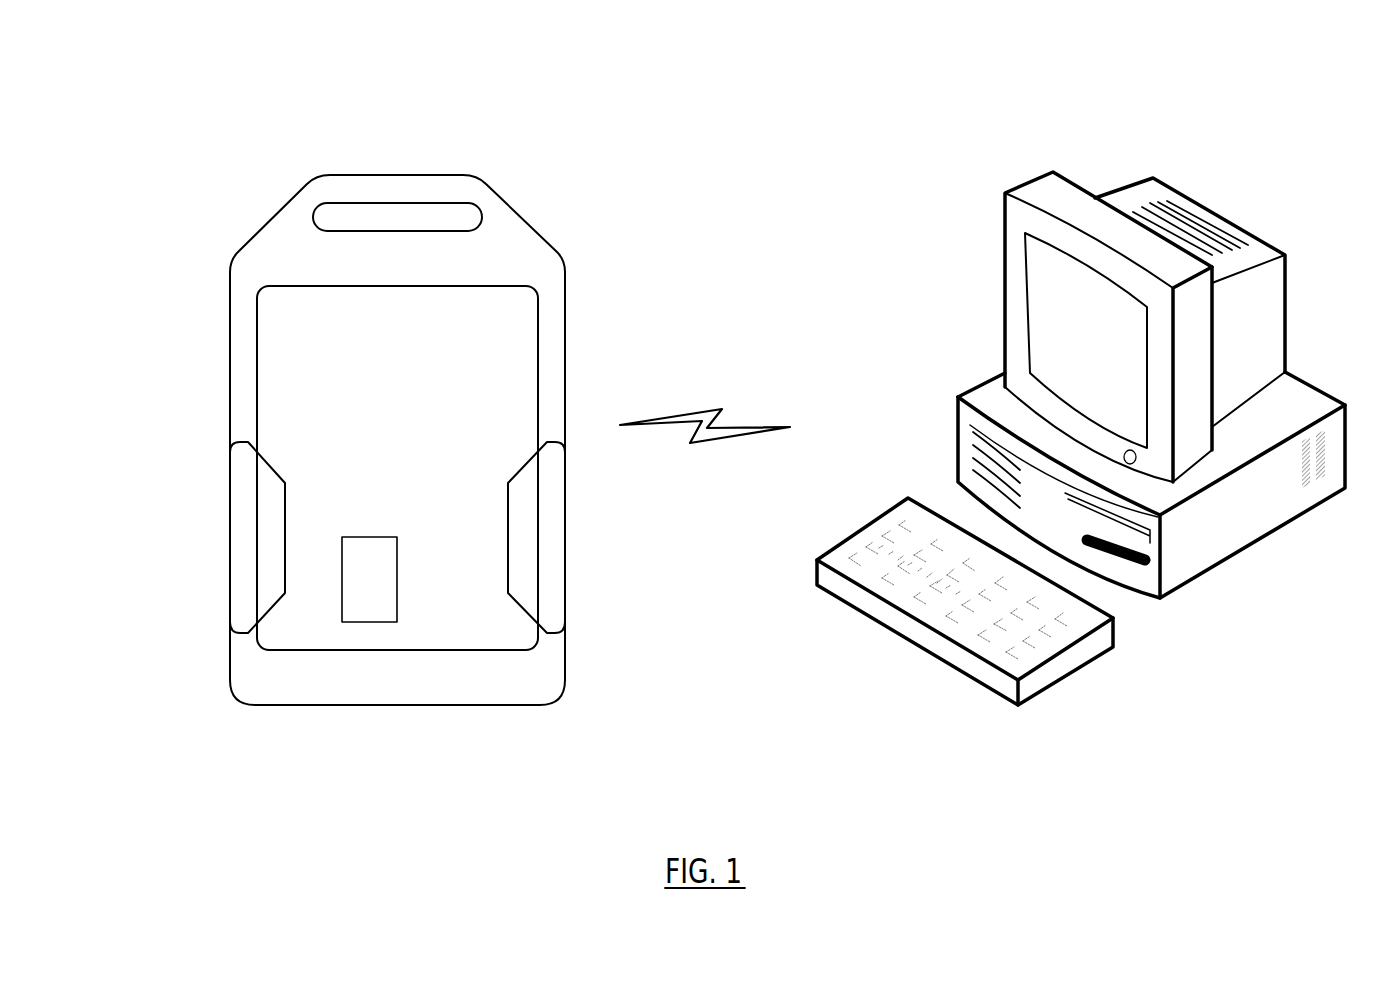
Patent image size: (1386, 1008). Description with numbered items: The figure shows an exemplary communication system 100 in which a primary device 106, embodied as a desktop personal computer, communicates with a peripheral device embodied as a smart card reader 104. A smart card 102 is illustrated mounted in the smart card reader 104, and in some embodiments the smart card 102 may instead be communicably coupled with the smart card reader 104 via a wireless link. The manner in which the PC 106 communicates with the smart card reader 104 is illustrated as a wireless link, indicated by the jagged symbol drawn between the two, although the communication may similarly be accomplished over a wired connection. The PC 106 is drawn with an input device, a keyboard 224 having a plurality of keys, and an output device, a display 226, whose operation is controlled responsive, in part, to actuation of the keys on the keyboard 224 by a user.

The communication system 100 is at (202, 119).
The smart card 102 is at (498, 482).
The smart card reader 104 is at (545, 694).
The primary device 106 is at (958, 397).
The keyboard 224 is at (817, 560).
The display 226 is at (1005, 193).